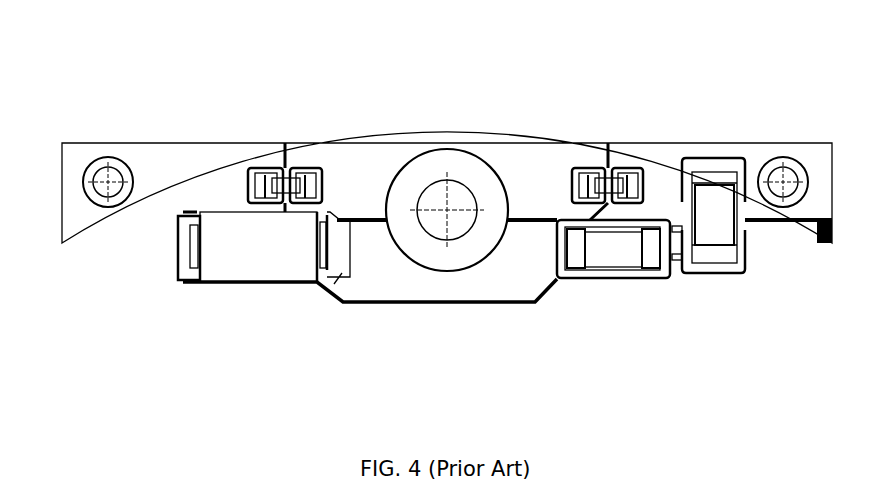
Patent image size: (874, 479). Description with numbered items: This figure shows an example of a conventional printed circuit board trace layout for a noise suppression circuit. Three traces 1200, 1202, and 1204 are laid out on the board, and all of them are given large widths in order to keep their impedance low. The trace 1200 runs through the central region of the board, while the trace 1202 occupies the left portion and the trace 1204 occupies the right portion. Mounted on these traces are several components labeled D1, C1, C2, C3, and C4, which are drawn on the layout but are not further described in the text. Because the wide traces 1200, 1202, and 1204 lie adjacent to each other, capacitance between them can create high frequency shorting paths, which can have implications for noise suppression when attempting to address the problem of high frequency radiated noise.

The trace 1200 is at (384, 188).
The trace 1202 is at (196, 188).
The trace 1204 is at (662, 188).
The diode D1 is at (242, 250).
The first capacitor C1 is at (288, 160).
The second capacitor C2 is at (598, 170).
The third capacitor C3 is at (713, 230).
The fourth capacitor C4 is at (623, 247).